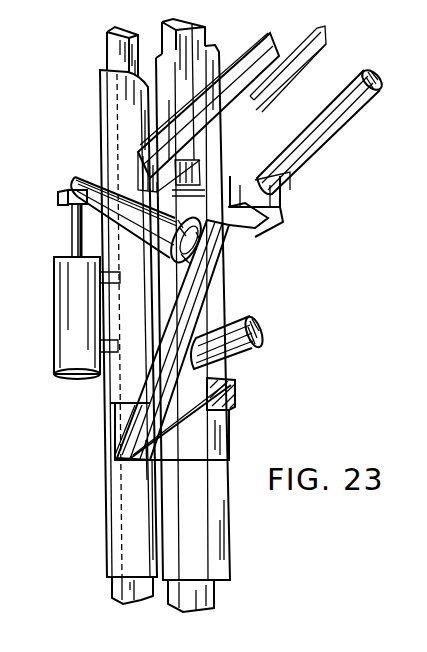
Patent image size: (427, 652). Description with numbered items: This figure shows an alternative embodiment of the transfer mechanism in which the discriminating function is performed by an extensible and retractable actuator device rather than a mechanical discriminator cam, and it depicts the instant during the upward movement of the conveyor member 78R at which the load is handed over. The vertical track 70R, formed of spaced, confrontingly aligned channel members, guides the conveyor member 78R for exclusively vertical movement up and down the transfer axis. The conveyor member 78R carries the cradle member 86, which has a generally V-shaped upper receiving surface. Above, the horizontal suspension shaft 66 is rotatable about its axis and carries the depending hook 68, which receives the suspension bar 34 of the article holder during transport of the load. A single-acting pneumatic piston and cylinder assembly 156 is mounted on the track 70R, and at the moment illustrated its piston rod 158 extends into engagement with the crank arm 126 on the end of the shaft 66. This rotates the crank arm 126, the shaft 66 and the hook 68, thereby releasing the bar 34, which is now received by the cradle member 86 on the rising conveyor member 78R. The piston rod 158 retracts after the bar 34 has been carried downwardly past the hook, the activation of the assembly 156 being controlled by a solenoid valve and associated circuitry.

The crank arm 126 is at (90, 176).
The piston rod 158 is at (70, 220).
The pneumatic piston and cylinder assembly 156 is at (67, 378).
The suspension shaft 66 is at (352, 125).
The hook 68 is at (228, 278).
The suspension bar 34 is at (264, 326).
The cradle member 86 is at (240, 380).
The conveyor member 78R is at (226, 546).
The vertical track 70R is at (214, 590).